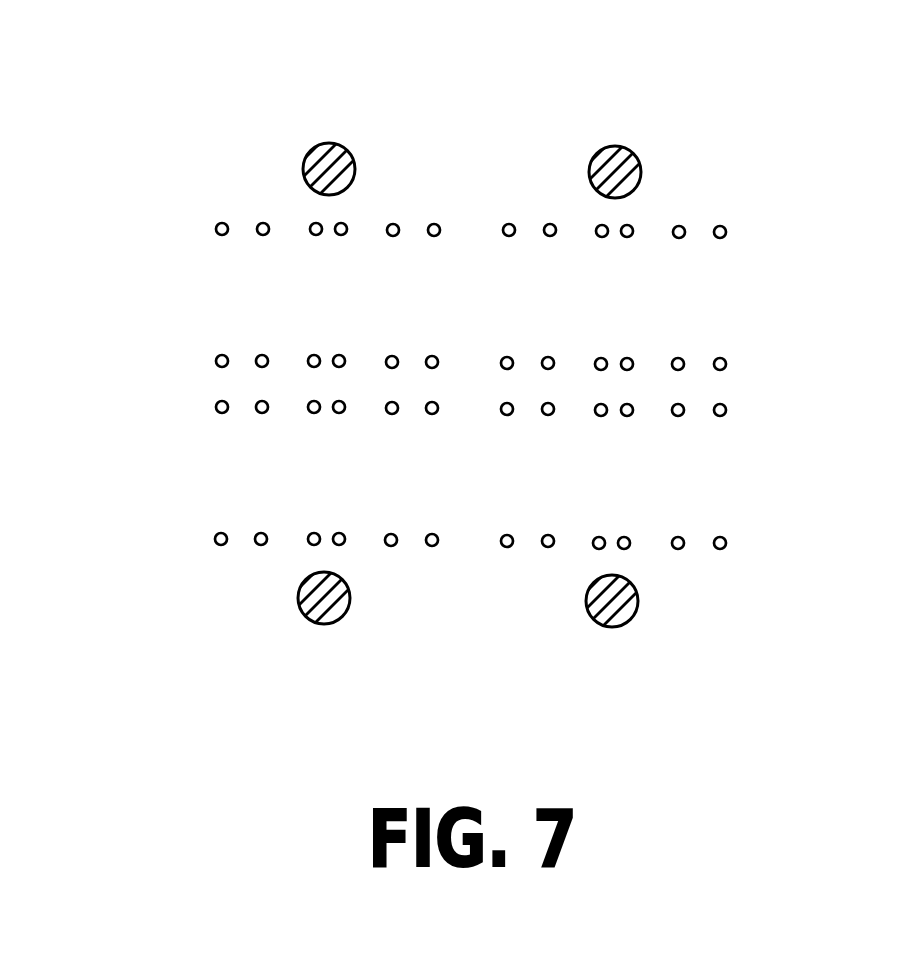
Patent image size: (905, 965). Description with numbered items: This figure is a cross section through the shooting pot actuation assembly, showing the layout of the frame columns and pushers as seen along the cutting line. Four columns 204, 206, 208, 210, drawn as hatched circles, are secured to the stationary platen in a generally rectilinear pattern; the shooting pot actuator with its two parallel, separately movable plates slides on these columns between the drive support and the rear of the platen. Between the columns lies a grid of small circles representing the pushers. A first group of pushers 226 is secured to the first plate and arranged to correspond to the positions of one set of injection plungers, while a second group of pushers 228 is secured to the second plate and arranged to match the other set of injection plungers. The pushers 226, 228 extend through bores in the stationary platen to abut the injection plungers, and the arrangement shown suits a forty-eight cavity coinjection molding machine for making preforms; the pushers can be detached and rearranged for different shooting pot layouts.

The column 204 is at (322, 148).
The column 206 is at (620, 150).
The column 208 is at (321, 618).
The column 210 is at (617, 622).
The first group of pushers 226 is at (679, 239).
The second group of pushers 228 is at (338, 355).